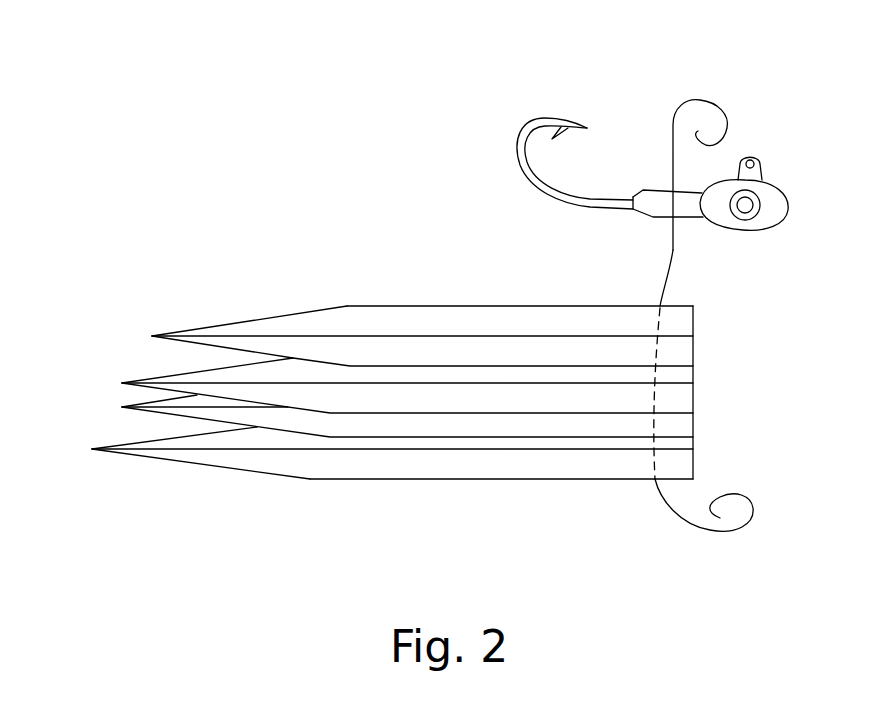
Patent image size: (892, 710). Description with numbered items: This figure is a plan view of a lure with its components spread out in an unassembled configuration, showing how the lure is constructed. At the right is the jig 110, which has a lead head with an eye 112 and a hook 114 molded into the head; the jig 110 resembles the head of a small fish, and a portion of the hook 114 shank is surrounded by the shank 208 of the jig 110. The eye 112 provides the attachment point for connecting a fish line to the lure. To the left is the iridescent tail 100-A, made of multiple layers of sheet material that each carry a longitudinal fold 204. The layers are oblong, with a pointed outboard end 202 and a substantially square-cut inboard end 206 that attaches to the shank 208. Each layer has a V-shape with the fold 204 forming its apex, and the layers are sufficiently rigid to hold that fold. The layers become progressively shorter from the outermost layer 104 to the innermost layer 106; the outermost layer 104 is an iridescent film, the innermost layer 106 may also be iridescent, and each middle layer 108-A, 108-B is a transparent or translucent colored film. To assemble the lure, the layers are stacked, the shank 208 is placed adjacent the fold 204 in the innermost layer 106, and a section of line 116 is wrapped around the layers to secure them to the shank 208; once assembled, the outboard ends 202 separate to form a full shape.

The iridescent tail 100-A is at (245, 240).
The outermost layer 104 is at (550, 480).
The innermost layer 106 is at (438, 305).
The middle layer 108-A is at (187, 373).
The middle layer 108-B is at (185, 418).
The jig 110 is at (476, 163).
The eye 112 is at (754, 157).
The hook 114 is at (561, 126).
The line 116 is at (703, 102).
The outboard end 202 is at (170, 333).
The longitudinal fold 204 is at (494, 336).
The inboard end 206 is at (690, 305).
The shank 208 is at (663, 190).